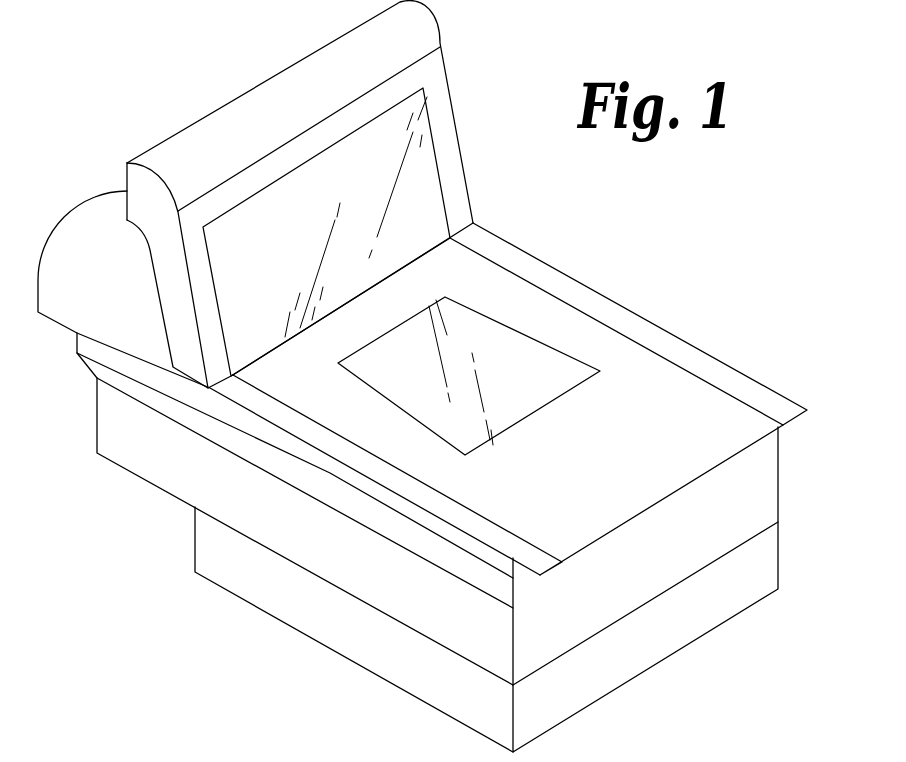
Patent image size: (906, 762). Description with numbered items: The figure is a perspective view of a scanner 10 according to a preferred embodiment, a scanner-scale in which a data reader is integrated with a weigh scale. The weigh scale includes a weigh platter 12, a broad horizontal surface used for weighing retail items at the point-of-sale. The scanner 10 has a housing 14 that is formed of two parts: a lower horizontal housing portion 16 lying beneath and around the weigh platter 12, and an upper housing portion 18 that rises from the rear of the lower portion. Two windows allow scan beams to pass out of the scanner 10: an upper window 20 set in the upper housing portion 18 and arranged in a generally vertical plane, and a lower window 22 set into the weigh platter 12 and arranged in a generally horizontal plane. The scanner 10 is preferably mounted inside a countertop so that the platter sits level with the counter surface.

The scanner 10 is at (225, 68).
The weigh platter 12 is at (653, 395).
The housing 14 is at (527, 167).
The lower horizontal housing portion 16 is at (493, 249).
The upper housing portion 18 is at (455, 177).
The upper window 20 is at (412, 133).
The lower window 22 is at (512, 358).